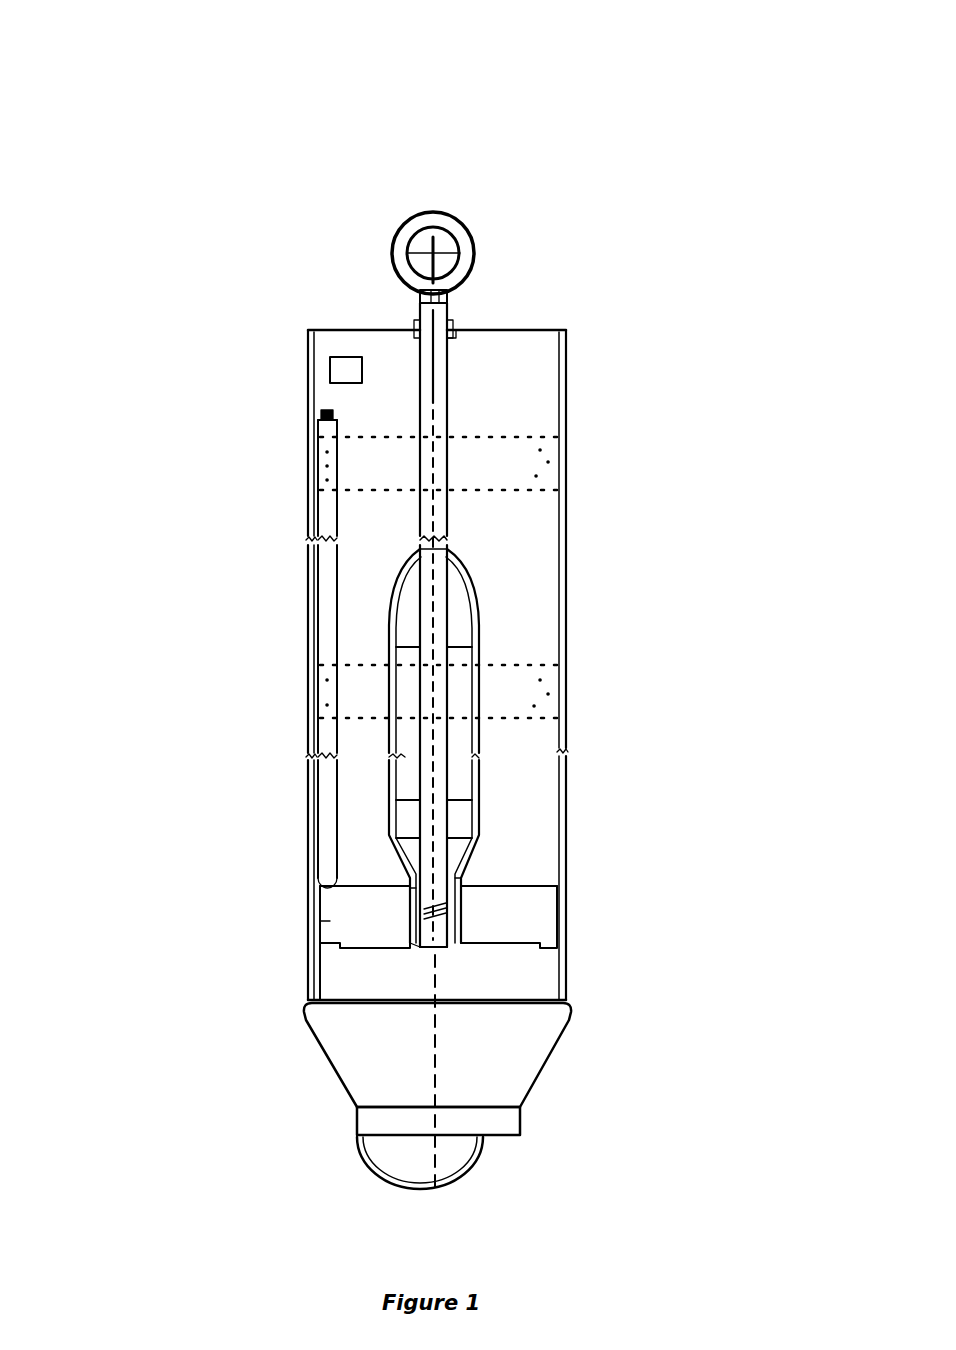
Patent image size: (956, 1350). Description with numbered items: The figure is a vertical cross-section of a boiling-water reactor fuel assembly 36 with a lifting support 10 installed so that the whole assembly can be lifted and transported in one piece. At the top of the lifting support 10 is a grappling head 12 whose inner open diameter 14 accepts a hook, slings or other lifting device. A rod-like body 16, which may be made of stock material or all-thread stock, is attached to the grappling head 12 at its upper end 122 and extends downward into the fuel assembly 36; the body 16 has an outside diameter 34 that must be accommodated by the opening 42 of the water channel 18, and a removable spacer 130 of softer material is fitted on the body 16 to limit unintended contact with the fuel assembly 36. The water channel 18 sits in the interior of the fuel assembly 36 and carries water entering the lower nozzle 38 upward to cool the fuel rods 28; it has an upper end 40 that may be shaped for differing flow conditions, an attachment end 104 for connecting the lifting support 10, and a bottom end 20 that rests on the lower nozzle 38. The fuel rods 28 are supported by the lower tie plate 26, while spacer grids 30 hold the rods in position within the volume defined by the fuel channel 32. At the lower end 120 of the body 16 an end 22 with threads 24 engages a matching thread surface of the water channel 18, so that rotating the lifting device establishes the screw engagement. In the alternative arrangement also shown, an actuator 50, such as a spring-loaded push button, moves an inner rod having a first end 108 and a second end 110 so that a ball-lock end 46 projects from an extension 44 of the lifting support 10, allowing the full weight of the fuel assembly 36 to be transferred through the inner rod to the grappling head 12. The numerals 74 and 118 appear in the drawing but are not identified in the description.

The lifting support 10 is at (513, 100).
The grappling head 12 is at (463, 220).
The inner open diameter 14 is at (427, 252).
The body 16 is at (420, 400).
The water channel 18 is at (477, 580).
The bottom end 20 is at (461, 913).
The end 22 is at (447, 897).
The threads 24 is at (410, 913).
The lower tie plate 26 is at (330, 921).
The fuel rods 28 is at (330, 790).
The spacer grids 30 is at (566, 473).
The fuel channel 32 is at (566, 645).
The outside diameter 34 is at (453, 317).
The fuel assembly 36 is at (684, 784).
The lower nozzle 38 is at (560, 1037).
The upper end 40 is at (400, 573).
The opening 42 is at (413, 548).
The extension 44 is at (450, 948).
The ball-lock end 46 is at (420, 950).
The actuator 50 is at (420, 296).
The window 74 is at (330, 368).
The attachment end 104 is at (415, 950).
The first end 108 is at (420, 305).
The second end 110 is at (450, 950).
The neck 118 is at (463, 872).
The lower end 120 is at (413, 888).
The upper end 122 is at (450, 297).
The spacer 130 is at (454, 338).